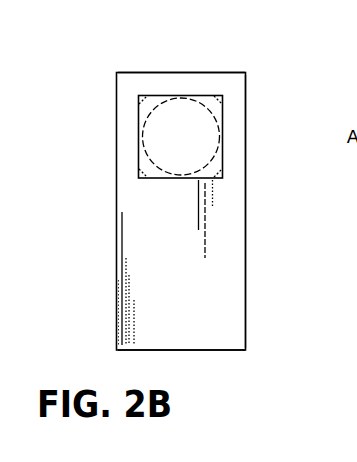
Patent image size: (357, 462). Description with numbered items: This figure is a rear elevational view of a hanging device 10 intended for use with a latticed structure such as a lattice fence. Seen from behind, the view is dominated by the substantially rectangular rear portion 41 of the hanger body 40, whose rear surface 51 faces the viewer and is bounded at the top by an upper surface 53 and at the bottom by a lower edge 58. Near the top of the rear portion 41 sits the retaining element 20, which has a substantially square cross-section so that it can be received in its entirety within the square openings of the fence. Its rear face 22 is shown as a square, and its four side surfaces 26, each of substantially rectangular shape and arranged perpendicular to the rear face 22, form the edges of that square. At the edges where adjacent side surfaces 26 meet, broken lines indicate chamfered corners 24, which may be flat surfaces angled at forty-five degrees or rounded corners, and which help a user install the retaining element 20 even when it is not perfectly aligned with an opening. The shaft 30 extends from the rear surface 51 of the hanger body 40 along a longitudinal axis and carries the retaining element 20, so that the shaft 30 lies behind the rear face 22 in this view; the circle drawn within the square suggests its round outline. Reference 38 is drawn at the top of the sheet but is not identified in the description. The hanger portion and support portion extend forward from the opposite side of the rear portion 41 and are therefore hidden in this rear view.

The hanging device 10 is at (97, 66).
The retaining element 20 is at (233, 115).
The rear face 22 is at (177, 142).
The chamfered corners 24 is at (138, 100).
The side surfaces 26 is at (166, 96).
The shaft 30 is at (132, 136).
The top region 38 is at (295, 6).
The hanger body 40 is at (110, 309).
The rear portion 41 is at (246, 303).
The rear surface 51 is at (169, 306).
The upper surface 53 is at (216, 72).
The lower edge 58 is at (222, 350).